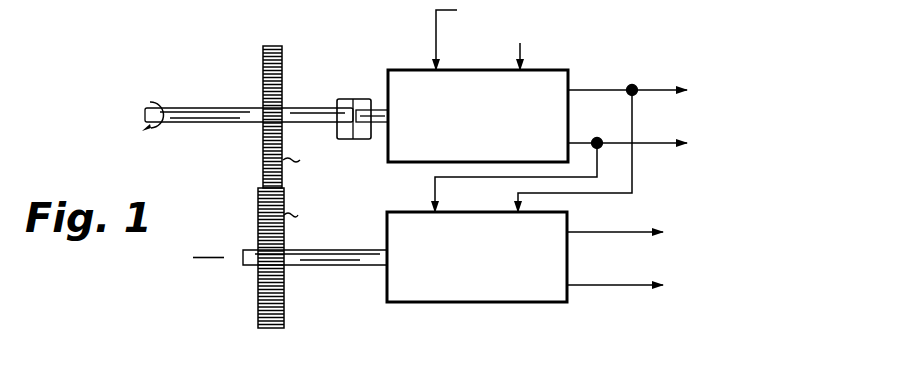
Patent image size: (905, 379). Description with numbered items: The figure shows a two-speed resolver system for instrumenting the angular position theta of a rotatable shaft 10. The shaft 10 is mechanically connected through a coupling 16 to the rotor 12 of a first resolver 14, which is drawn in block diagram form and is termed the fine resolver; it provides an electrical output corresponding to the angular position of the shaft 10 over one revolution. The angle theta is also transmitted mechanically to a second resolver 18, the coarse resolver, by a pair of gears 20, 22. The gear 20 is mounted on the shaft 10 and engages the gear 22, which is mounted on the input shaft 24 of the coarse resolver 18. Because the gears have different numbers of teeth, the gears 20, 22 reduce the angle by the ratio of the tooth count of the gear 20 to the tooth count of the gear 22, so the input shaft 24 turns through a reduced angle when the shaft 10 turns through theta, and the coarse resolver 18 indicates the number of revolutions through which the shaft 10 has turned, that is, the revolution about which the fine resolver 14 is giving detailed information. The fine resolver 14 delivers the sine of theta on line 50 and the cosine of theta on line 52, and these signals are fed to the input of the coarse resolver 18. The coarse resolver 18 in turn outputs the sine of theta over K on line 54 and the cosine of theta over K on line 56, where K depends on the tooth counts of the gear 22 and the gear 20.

The rotatable shaft 10 is at (228, 107).
The rotor 12 is at (380, 108).
The first resolver 14 is at (549, 68).
The coupling 16 is at (340, 97).
The second resolver 18 is at (437, 306).
The gear 20 is at (263, 160).
The gear 22 is at (258, 215).
The input shaft 24 is at (358, 266).
The line 50 is at (600, 88).
The line 52 is at (585, 142).
The line 54 is at (586, 231).
The line 56 is at (586, 284).